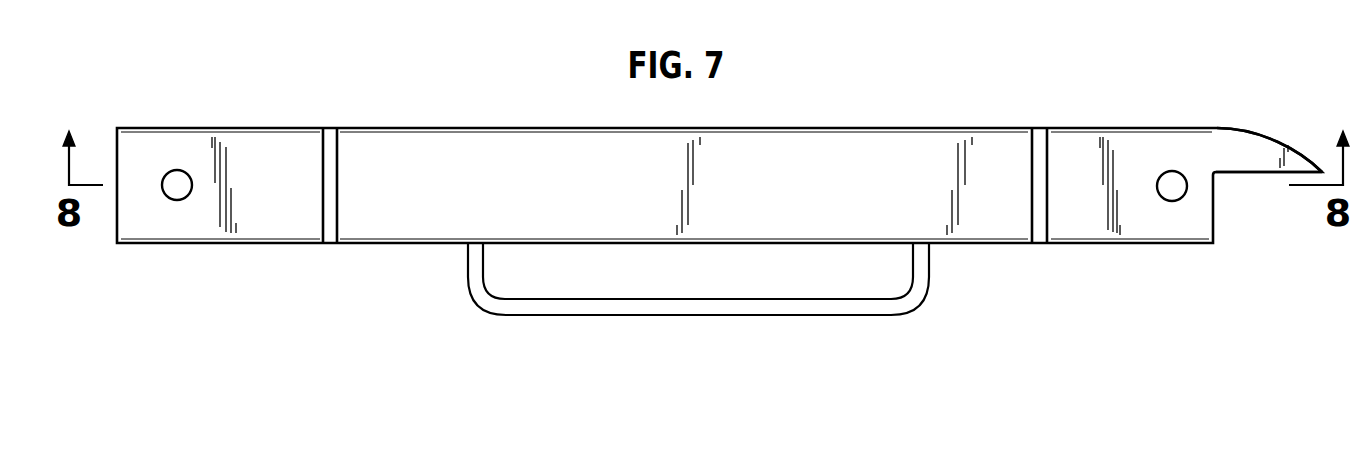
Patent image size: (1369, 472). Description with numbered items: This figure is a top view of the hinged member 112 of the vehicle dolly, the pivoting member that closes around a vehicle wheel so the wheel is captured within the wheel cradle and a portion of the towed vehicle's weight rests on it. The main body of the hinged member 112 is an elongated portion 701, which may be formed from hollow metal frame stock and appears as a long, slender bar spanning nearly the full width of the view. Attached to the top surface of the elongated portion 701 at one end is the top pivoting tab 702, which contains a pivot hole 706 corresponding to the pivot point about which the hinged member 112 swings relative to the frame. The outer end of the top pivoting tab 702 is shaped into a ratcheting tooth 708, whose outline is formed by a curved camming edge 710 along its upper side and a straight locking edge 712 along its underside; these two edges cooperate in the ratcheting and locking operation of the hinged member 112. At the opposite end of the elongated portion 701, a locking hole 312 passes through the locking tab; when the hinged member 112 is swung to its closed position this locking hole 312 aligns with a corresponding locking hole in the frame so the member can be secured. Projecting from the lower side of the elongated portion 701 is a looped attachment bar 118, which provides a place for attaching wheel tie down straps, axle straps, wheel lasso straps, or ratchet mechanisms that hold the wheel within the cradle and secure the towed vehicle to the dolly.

The hinged member 112 is at (472, 319).
The attachment bar 118 is at (582, 305).
The locking hole 312 is at (175, 182).
The elongated portion 701 is at (883, 148).
The top pivoting tab 702 is at (1087, 153).
The pivot hole 706 is at (1173, 178).
The ratcheting tooth 708 is at (1287, 143).
The curved camming edge 710 is at (1230, 127).
The straight locking edge 712 is at (1258, 175).